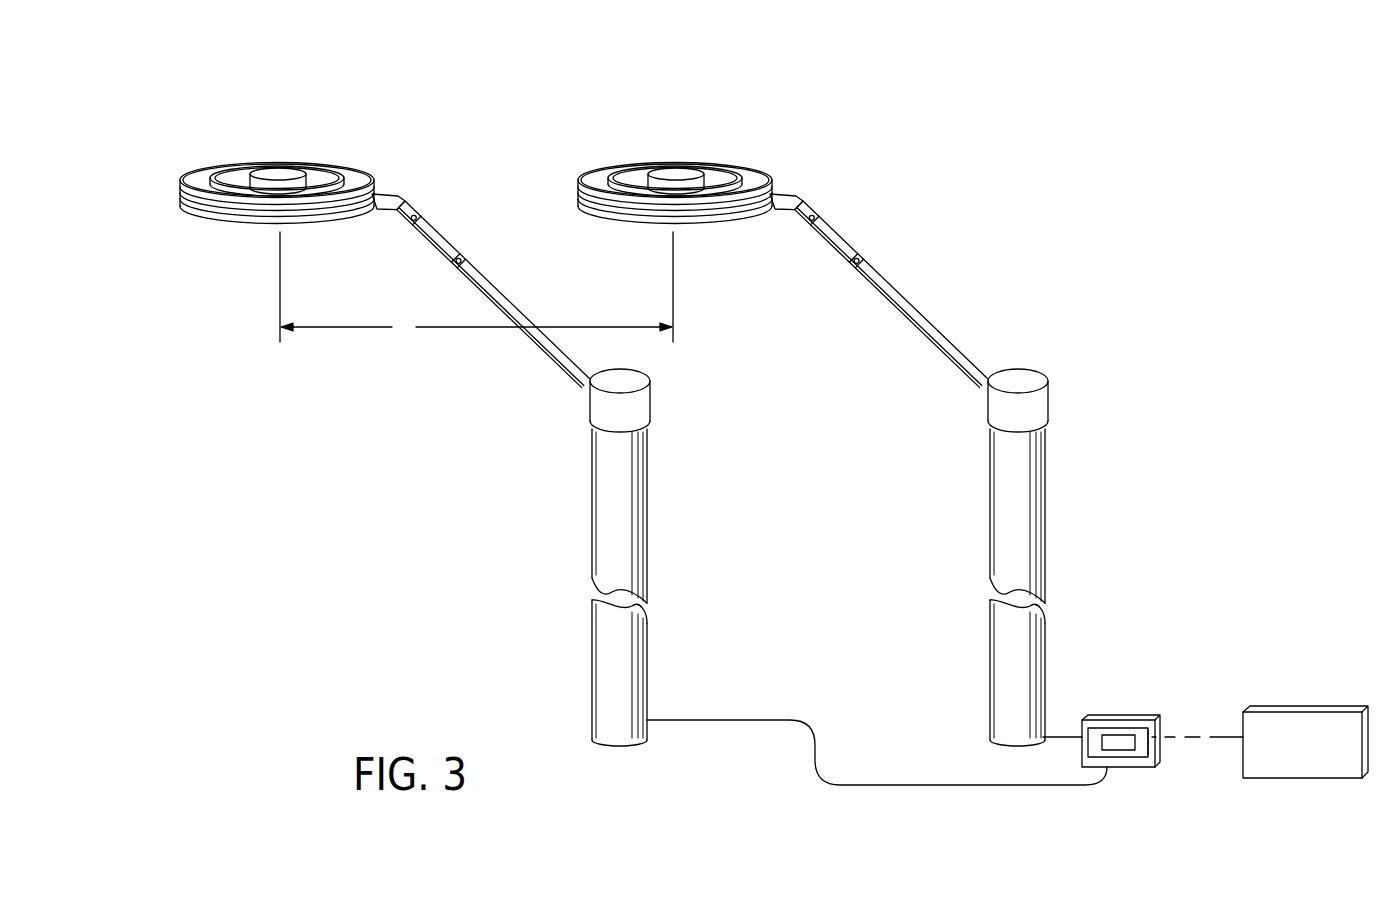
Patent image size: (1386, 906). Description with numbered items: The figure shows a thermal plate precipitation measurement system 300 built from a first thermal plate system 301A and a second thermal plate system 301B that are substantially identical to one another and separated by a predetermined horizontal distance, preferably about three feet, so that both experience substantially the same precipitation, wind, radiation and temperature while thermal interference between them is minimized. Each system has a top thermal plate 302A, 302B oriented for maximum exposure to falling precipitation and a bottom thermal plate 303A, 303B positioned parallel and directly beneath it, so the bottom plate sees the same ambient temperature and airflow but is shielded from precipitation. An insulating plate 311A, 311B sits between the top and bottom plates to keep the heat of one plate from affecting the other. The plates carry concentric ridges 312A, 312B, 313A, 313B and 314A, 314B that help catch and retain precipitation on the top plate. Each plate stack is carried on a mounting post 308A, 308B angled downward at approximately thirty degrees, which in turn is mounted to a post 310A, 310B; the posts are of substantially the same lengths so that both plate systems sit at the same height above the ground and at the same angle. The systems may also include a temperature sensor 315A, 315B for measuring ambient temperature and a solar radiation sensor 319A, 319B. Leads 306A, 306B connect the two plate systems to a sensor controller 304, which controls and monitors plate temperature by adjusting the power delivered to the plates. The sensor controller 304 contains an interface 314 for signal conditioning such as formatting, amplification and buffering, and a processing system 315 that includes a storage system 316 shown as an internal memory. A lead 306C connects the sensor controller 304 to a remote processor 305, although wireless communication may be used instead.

The thermal plate precipitation measurement system 300 is at (916, 80).
The first thermal plate system 301A is at (255, 110).
The second thermal plate system 301B is at (705, 183).
The top thermal plate 302A is at (348, 170).
The top thermal plate 302B is at (679, 160).
The bottom thermal plate 303A is at (316, 226).
The bottom thermal plate 303B is at (675, 232).
The sensor controller 304 is at (1145, 721).
The remote processor 305 is at (1290, 712).
The lead 306A is at (1060, 784).
The lead 306B is at (1063, 736).
The lead 306C is at (1161, 737).
The mounting post 308A is at (546, 347).
The mounting post 308B is at (883, 291).
The post 310A is at (642, 543).
The post 310B is at (1050, 557).
The insulating plate 311A is at (250, 213).
The insulating plate 311B is at (675, 220).
The concentric ridge 312A is at (278, 171).
The concentric ridge 312B is at (676, 158).
The concentric ridge 313A is at (240, 168).
The concentric ridge 313B is at (674, 160).
The concentric ridge 314A is at (203, 167).
The concentric ridge 314B is at (666, 162).
The interface 314 is at (1155, 742).
The temperature sensor 315A is at (459, 271).
The temperature sensor 315B is at (851, 285).
The processing system 315 is at (1118, 728).
The storage system 316 is at (1120, 750).
The solar radiation sensor 319A is at (416, 224).
The solar radiation sensor 319B is at (803, 244).